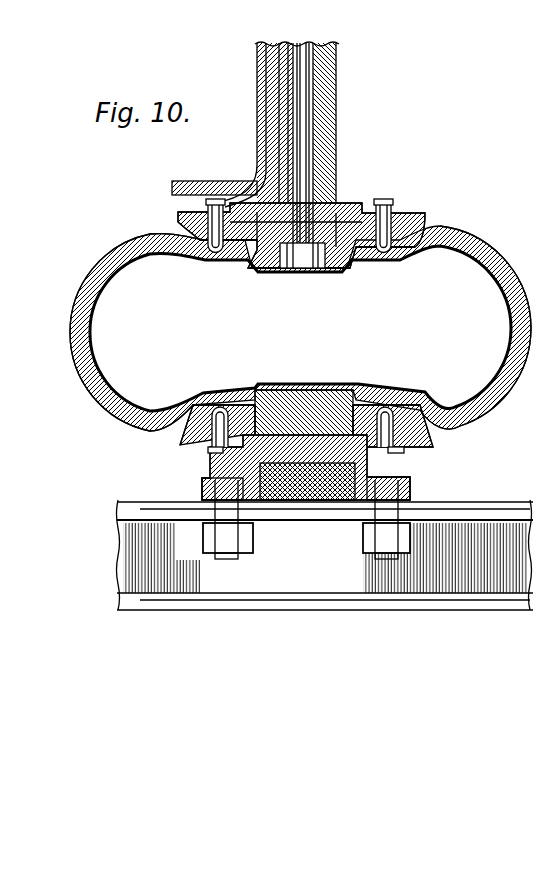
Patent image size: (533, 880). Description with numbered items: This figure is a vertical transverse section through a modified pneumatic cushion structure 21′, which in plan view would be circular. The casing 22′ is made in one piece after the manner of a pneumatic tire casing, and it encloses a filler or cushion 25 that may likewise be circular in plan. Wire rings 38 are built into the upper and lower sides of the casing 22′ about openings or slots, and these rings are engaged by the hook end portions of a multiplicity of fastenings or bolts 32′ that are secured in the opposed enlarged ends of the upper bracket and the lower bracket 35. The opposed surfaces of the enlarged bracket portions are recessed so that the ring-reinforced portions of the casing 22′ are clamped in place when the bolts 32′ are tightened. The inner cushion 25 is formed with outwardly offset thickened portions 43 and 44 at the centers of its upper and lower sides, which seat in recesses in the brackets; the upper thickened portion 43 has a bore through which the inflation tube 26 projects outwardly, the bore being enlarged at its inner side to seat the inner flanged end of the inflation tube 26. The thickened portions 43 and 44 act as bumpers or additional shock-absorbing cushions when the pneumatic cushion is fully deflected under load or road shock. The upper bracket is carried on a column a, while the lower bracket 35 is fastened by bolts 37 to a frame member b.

The column a is at (257, 52).
The frame member b is at (340, 578).
The cushion structure 21′ is at (101, 214).
The casing 22′ is at (112, 413).
The filler or cushion 25 is at (477, 405).
The inflation tube 26 is at (300, 143).
The fastenings or bolts 32′ is at (197, 202).
The bracket 35 is at (250, 460).
The bolts 37 is at (230, 543).
The wire rings 38 is at (176, 230).
The upper thickened portion 43 is at (327, 391).
The lower thickened portion 44 is at (253, 185).